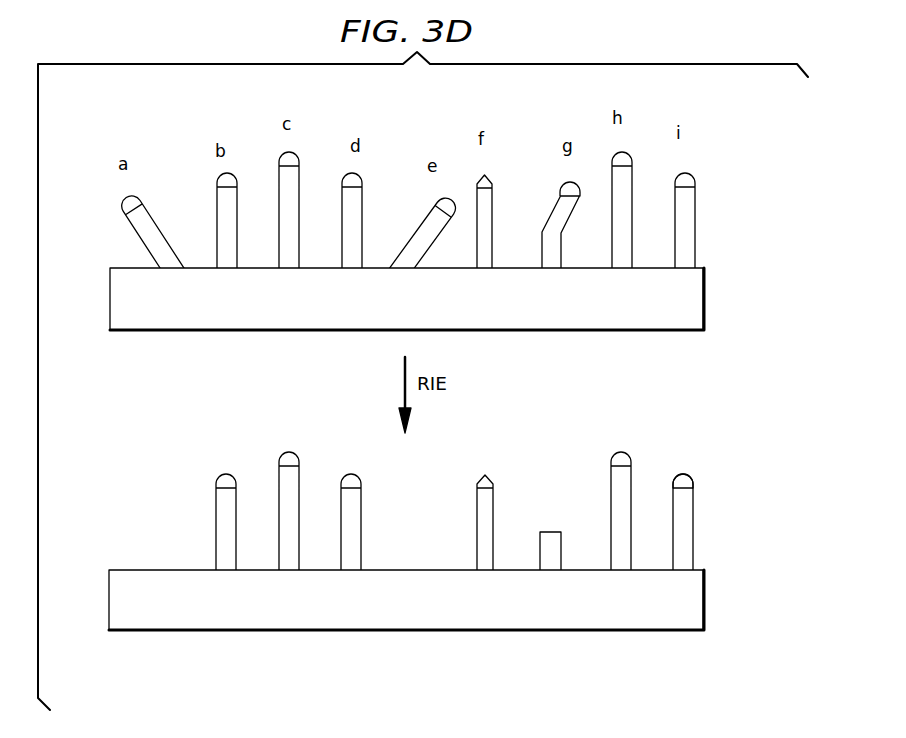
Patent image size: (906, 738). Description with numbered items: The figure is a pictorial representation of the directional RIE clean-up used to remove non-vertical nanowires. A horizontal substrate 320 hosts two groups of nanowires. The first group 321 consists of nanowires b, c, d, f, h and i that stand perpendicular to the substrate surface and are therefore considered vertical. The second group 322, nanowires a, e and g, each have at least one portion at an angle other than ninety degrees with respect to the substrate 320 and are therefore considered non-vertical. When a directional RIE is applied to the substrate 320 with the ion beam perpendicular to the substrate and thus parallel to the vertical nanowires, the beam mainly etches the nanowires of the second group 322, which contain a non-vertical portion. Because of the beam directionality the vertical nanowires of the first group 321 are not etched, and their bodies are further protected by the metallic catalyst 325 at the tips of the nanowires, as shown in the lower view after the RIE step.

The substrate 320 is at (703, 305).
The first group of nanowires 321 is at (695, 222).
The second group of nanowires 322 is at (128, 224).
The metallic catalyst 325 is at (683, 473).